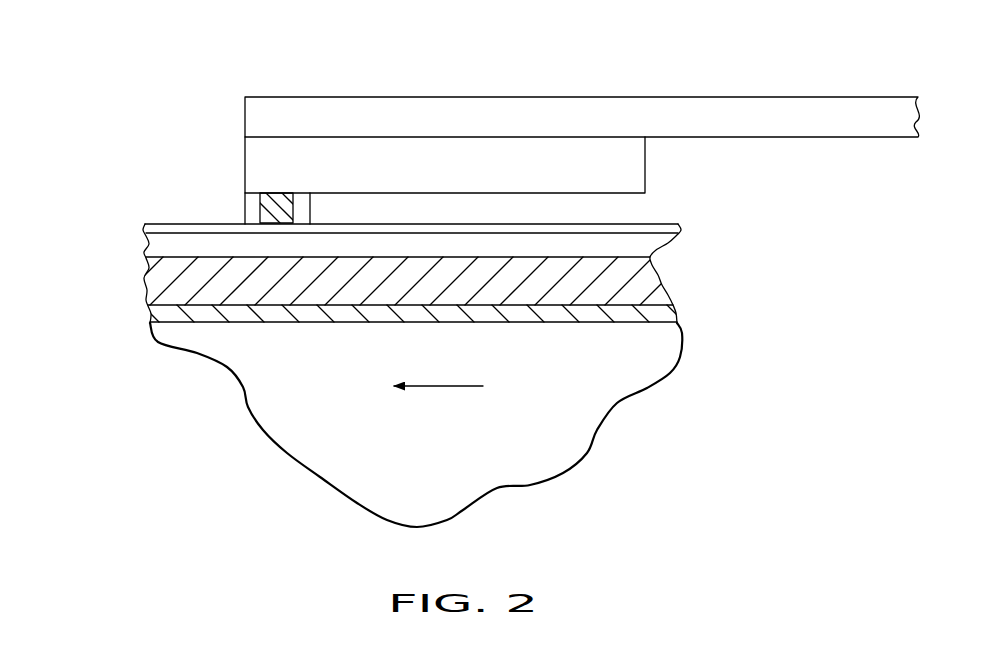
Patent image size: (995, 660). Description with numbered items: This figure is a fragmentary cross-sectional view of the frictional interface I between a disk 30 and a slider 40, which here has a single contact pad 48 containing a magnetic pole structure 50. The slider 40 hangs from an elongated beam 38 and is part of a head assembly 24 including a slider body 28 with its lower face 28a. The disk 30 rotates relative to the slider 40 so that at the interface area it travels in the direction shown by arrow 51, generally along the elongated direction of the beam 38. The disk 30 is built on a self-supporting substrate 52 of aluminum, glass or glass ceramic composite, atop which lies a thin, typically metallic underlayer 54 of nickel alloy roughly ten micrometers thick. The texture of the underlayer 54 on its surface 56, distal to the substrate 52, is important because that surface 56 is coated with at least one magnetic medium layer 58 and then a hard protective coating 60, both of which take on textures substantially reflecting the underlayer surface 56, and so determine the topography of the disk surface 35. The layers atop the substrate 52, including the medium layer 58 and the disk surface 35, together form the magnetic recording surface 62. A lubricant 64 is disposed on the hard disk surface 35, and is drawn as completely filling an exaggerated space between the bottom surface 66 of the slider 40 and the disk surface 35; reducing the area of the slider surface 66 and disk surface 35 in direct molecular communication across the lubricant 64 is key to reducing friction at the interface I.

The head gimbal assembly 24 is at (654, 64).
The slider 28 is at (365, 136).
The slider air bearing surface 28a is at (493, 155).
The beam 38 is at (778, 96).
The slider 40 is at (166, 156).
The magnetic pole structure 50 is at (276, 193).
The contact pad 48 is at (311, 207).
The interface I is at (239, 221).
The disk surface 35 is at (666, 222).
The magnetic recording surface 62 is at (102, 230).
The lubricant 64 is at (143, 224).
The hard protective coating 60 is at (143, 245).
The magnetic medium layer 58 is at (143, 298).
The underlayer 54 is at (157, 336).
The substrate 52 is at (272, 400).
The arrow 51 is at (443, 387).
The bottom surface of the slider 66 is at (277, 227).
The underlayer surface 56 is at (649, 298).
The disk 30 is at (755, 347).